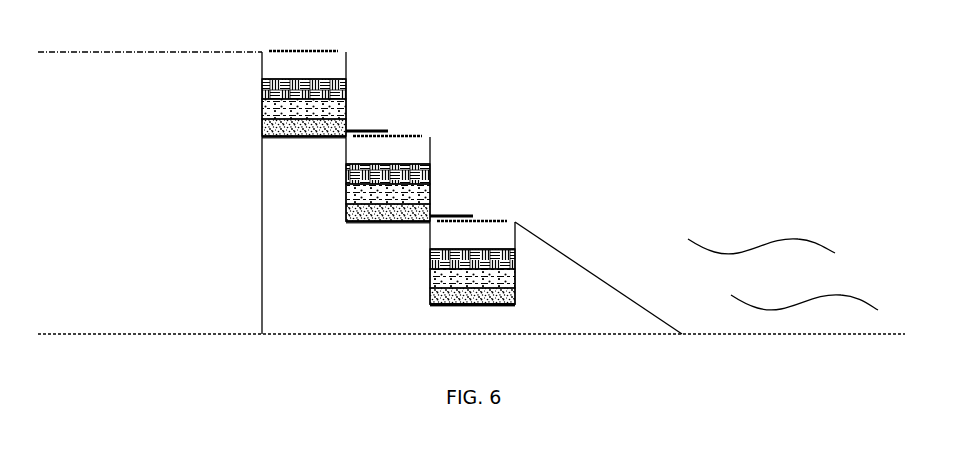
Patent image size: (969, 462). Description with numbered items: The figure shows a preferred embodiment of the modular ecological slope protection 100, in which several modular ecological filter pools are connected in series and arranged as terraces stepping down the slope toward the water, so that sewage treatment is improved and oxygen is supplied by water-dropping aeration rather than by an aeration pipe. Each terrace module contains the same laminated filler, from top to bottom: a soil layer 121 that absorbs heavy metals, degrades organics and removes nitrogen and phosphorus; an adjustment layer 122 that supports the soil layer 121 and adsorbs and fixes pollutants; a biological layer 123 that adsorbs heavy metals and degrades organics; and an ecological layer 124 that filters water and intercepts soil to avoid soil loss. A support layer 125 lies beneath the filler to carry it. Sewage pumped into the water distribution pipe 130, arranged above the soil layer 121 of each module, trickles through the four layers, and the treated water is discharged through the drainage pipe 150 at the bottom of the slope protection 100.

The ecological slope protection 100 is at (587, 253).
The soil layer 121 is at (262, 77).
The adjustment layer 122 is at (262, 97).
The biological layer 123 is at (262, 117).
The ecological layer 124 is at (262, 135).
The support layer 125 is at (262, 140).
The water distribution pipe 130 is at (304, 50).
The drainage pipe 150 is at (375, 130).